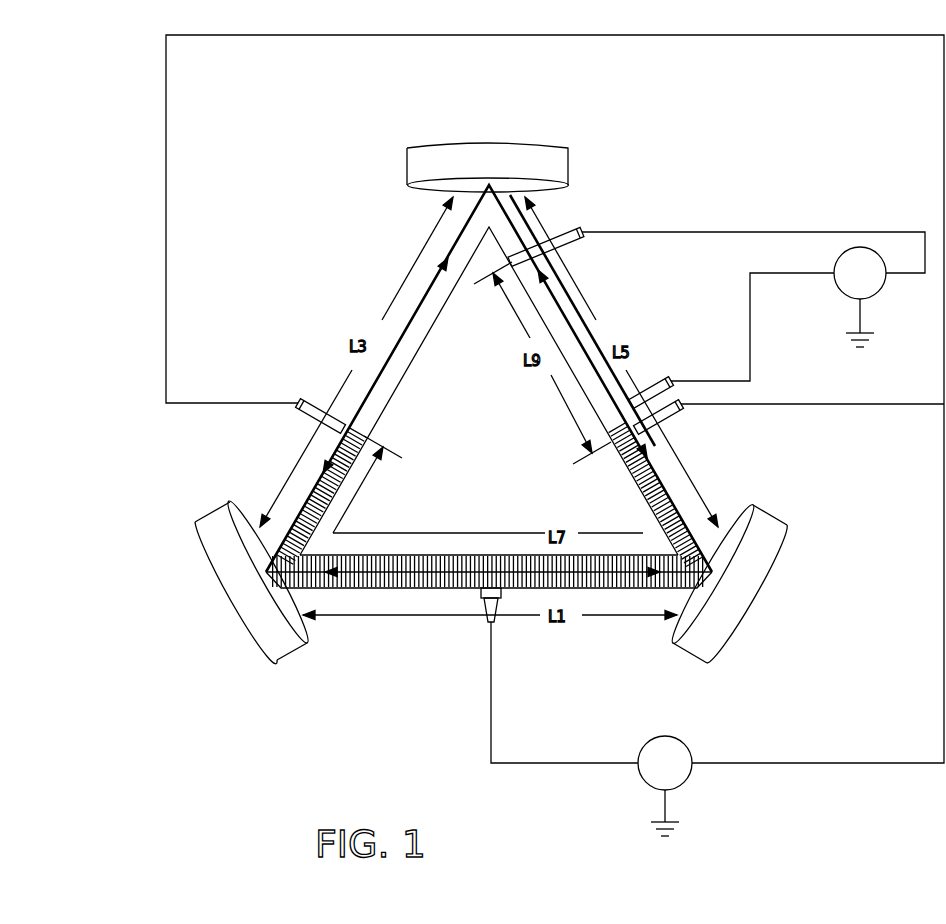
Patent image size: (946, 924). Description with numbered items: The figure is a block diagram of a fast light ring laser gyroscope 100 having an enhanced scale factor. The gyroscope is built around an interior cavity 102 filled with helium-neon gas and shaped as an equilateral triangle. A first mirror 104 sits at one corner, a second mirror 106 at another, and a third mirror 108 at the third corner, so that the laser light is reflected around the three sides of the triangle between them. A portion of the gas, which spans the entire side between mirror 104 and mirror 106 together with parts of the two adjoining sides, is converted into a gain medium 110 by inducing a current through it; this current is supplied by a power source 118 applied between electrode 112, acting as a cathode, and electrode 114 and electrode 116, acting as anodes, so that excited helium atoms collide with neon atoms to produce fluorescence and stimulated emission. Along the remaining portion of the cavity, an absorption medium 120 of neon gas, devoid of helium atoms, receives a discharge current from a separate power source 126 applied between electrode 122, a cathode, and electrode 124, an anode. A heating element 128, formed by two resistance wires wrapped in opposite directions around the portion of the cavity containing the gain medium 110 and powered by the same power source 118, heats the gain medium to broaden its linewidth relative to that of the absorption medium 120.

The fast light ring laser gyroscope 100 is at (137, 590).
The interior cavity 102 is at (407, 308).
The first mirror 104 is at (750, 605).
The second mirror 106 is at (223, 590).
The third mirror 108 is at (430, 146).
The gain medium 110 is at (625, 592).
The electrode 112 is at (485, 620).
The electrode 114 is at (320, 405).
The electrode 116 is at (670, 420).
The power source 118 is at (683, 790).
The absorption medium 120 is at (575, 310).
The electrode 122 is at (648, 376).
The electrode 124 is at (565, 228).
The power source 126 is at (878, 298).
The heating element 128 is at (358, 592).